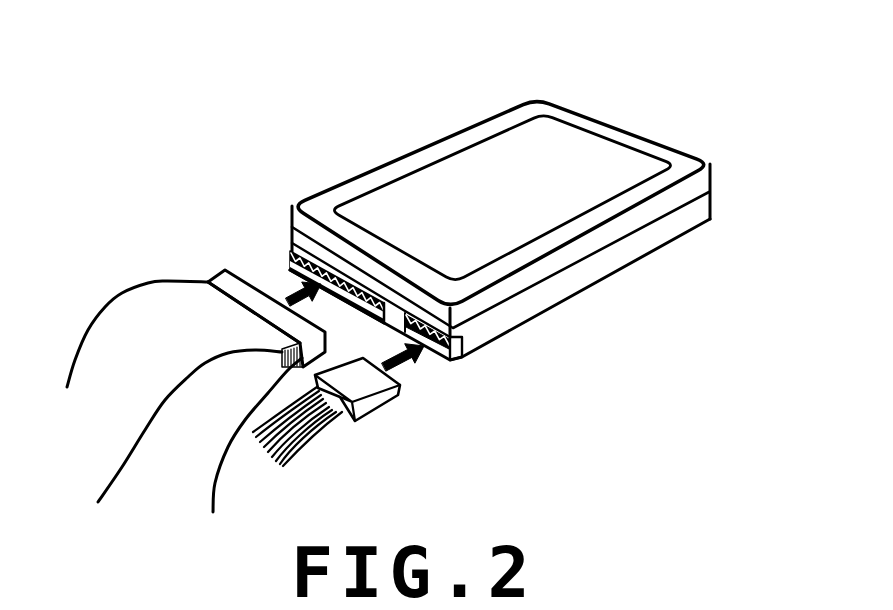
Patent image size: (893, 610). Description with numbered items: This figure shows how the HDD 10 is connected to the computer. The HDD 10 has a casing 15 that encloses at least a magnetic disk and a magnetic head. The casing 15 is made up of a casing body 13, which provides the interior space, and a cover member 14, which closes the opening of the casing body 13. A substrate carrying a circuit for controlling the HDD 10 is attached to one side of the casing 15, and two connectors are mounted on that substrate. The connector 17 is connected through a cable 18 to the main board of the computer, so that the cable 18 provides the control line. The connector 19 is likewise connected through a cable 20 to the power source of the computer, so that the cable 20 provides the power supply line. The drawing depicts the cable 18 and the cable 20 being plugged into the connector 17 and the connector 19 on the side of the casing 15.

The HDD 10 is at (412, 149).
The casing body 13 is at (685, 155).
The cover member 14 is at (612, 158).
The casing 15 is at (757, 118).
The connector 17 is at (292, 255).
The cable 18 is at (137, 296).
The connector 19 is at (443, 355).
The cable 20 is at (322, 430).